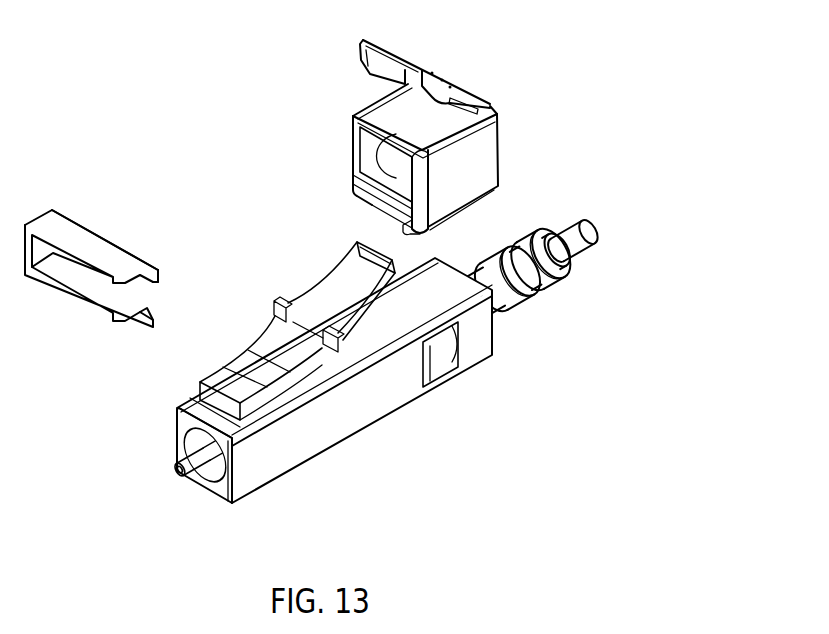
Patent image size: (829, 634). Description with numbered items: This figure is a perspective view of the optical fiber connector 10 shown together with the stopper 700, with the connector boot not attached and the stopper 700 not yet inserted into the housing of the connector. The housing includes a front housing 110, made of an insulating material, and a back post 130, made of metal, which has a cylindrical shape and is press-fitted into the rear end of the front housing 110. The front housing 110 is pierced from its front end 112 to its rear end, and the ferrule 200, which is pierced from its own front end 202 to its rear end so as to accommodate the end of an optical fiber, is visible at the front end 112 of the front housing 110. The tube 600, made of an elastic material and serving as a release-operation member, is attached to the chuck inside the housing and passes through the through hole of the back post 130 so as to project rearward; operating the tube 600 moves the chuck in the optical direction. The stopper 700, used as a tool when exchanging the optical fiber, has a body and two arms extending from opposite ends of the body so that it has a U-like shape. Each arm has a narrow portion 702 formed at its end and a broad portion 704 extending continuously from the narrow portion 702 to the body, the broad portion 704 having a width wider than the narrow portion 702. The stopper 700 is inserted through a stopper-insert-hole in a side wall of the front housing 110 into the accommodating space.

The optical fiber connector 10 is at (255, 98).
The front housing 110 is at (343, 423).
The front end 112 is at (178, 430).
The back post 130 is at (527, 293).
The ferrule 200 is at (207, 462).
The front end 202 is at (178, 472).
The tube 600 is at (580, 248).
The stopper 700 is at (115, 257).
The narrow portion 702 is at (159, 271).
The broad portion 704 is at (107, 252).